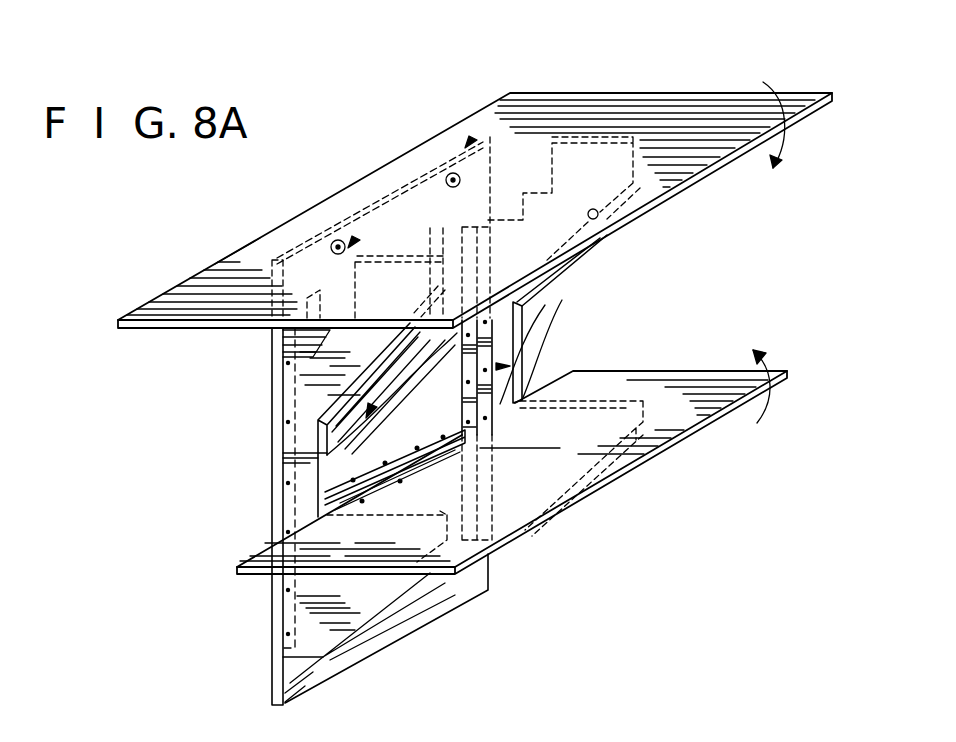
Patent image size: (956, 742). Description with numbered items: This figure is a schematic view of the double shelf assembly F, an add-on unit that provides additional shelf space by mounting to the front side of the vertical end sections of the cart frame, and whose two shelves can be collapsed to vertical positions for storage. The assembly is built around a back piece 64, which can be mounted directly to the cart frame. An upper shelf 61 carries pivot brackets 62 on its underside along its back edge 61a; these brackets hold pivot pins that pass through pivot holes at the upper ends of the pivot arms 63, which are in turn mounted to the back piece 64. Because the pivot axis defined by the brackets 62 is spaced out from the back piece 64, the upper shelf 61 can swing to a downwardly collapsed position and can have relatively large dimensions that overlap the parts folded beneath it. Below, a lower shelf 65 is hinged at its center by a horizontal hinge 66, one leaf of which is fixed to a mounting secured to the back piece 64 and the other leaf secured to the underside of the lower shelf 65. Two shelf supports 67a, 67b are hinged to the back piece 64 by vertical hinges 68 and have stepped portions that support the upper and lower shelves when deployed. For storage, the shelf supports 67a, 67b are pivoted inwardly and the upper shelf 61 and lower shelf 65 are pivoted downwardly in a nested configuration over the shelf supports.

The upper shelf 61 is at (686, 120).
The back edge 61a is at (248, 246).
The pivot bracket 62 is at (343, 238).
The pivot arm 63 is at (452, 210).
The back piece 64 is at (437, 597).
The lower shelf 65 is at (677, 413).
The horizontal hinge 66 is at (437, 440).
The shelf support 67a is at (315, 387).
The shelf support 67b is at (612, 237).
The vertical hinge 68 is at (525, 400).
The double shelf assembly F is at (248, 485).